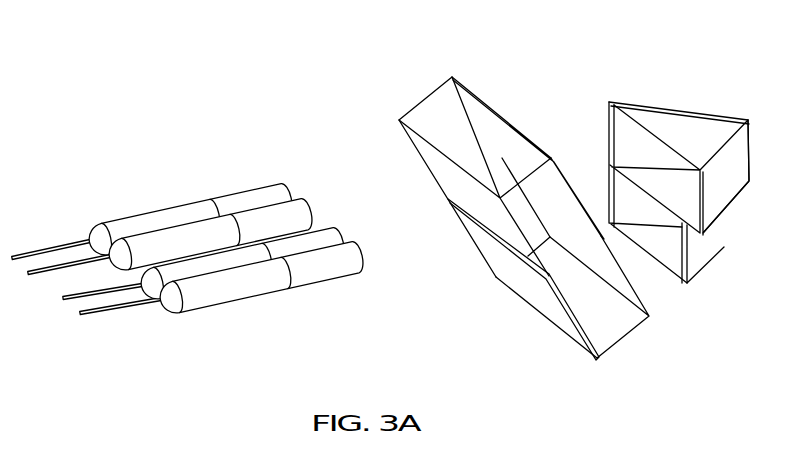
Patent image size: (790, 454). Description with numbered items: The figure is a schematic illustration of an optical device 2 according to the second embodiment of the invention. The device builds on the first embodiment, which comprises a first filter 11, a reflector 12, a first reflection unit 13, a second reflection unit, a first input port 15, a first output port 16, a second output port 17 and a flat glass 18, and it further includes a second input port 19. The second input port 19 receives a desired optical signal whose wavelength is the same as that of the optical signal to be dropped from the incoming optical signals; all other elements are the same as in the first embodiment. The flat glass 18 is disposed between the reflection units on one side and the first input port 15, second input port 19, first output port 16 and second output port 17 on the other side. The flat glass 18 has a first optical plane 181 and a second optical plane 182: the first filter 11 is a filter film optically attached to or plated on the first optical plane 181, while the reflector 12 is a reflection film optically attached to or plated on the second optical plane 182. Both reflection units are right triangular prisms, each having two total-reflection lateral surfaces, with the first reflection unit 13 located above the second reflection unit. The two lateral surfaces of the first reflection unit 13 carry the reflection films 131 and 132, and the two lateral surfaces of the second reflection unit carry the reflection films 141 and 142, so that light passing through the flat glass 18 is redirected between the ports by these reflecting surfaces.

The optical device 2 is at (199, 69).
The first input port 15 is at (130, 221).
The second input port 19 is at (192, 232).
The second output port 17 is at (278, 243).
The first output port 16 is at (328, 268).
The flat glass 18 is at (470, 145).
The second optical plane 182 is at (435, 160).
The first filter 11 is at (490, 103).
The reflector 12 is at (583, 288).
The first optical plane 181 is at (604, 258).
The first reflection unit 13 is at (694, 144).
The reflection film 131 is at (651, 103).
The reflection film 132 is at (739, 182).
The reflection film 141 is at (607, 180).
The reflection film 142 is at (713, 243).